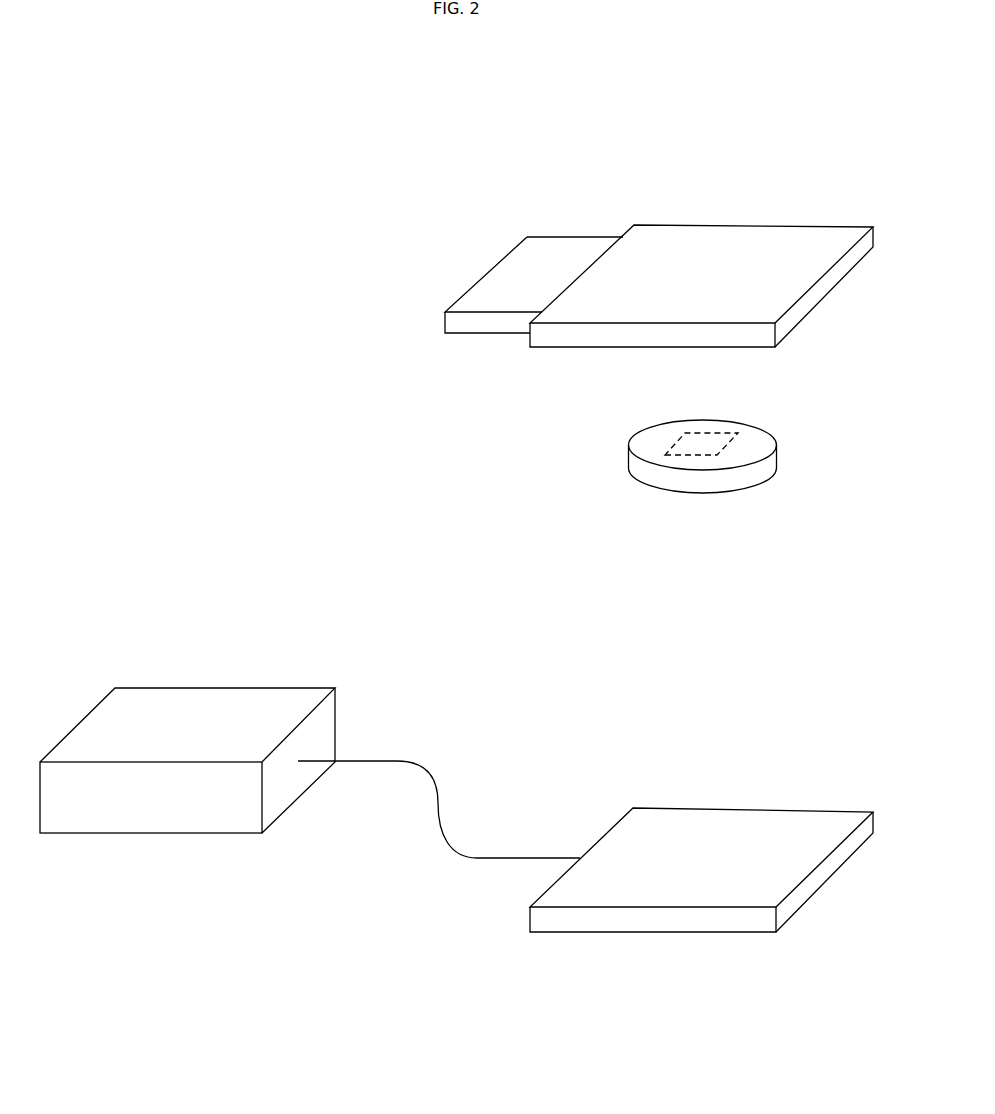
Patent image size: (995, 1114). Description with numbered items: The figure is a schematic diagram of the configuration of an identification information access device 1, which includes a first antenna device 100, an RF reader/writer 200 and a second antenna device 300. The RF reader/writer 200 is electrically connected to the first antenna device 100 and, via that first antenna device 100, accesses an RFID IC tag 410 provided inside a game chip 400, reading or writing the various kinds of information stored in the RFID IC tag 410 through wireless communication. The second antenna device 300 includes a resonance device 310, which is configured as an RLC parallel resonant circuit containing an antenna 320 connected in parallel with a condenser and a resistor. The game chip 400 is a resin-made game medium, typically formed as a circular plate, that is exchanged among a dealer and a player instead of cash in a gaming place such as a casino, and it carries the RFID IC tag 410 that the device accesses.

The identification information access device 1 is at (103, 188).
The first antenna device 100 is at (657, 918).
The RF reader/writer 200 is at (132, 823).
The second antenna device 300 is at (617, 167).
The resonance device 310 is at (555, 247).
The antenna 320 is at (763, 247).
The game chip 400 is at (737, 480).
The RFID IC tag 410 is at (708, 440).